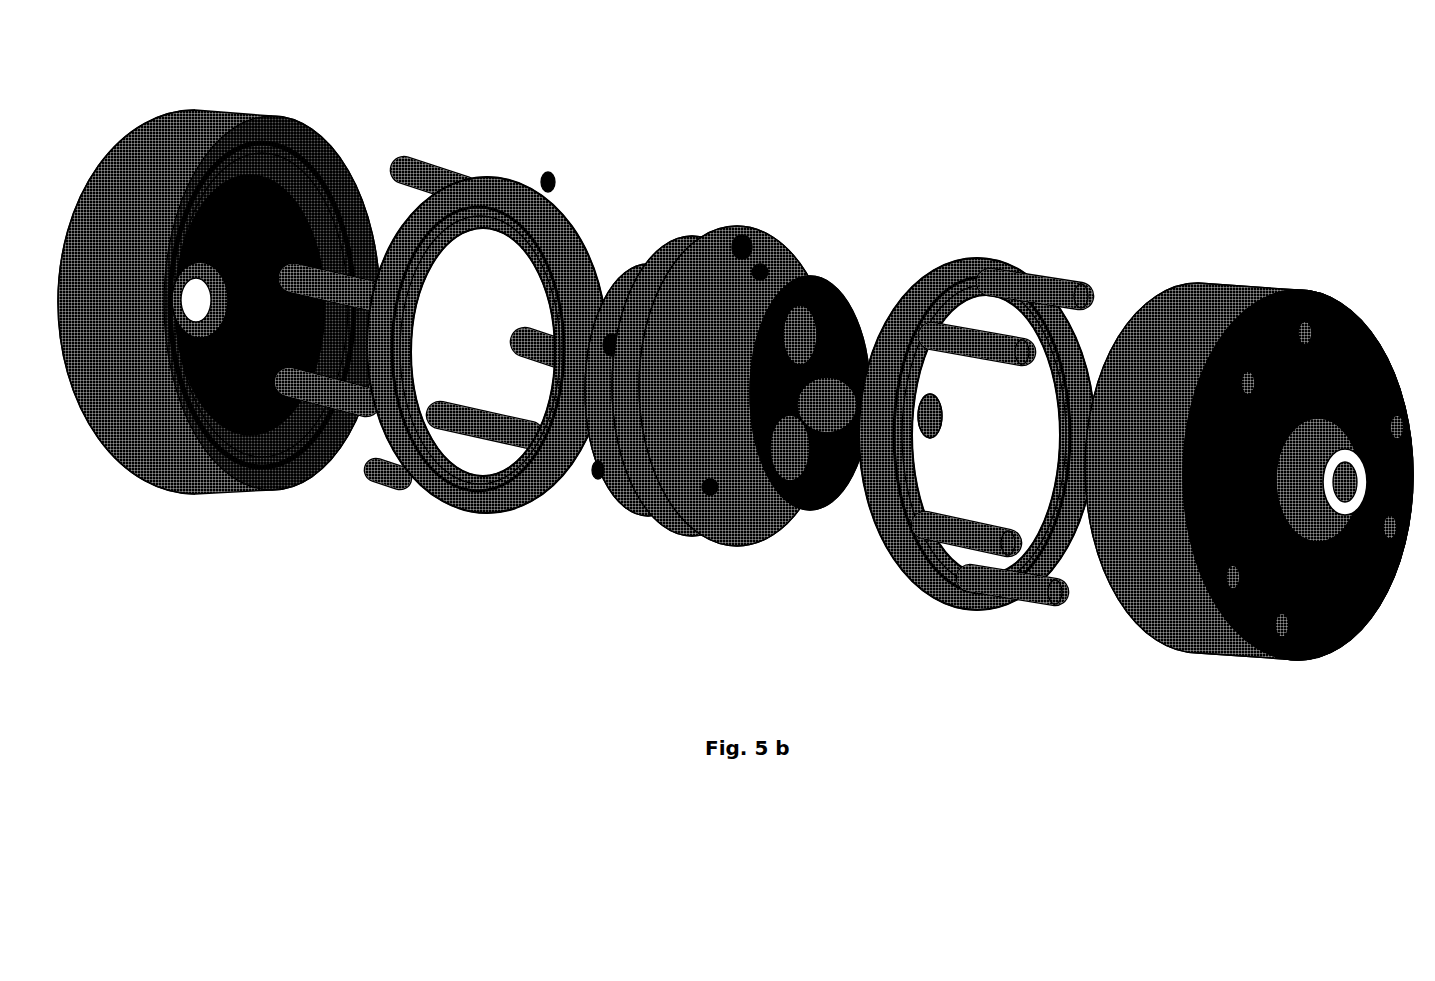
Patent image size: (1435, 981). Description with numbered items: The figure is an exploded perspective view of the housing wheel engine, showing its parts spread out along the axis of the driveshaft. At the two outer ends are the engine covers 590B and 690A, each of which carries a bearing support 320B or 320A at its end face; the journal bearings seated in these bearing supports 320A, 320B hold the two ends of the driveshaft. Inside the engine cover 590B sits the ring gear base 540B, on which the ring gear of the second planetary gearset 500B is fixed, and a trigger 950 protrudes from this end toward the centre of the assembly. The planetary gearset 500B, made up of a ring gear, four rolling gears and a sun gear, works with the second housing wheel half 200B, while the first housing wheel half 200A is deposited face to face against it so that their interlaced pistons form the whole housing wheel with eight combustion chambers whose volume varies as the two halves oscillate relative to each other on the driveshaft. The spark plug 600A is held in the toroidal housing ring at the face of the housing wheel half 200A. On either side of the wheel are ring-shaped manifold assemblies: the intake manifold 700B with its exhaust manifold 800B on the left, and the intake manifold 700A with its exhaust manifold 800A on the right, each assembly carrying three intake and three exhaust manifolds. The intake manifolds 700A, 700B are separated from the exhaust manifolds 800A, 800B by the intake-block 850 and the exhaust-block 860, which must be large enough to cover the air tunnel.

The engine cover 590B is at (130, 140).
The bearing support 320B is at (112, 482).
The ring gear base 540B is at (258, 128).
The trigger 950 is at (318, 142).
The exhaust-block 860 is at (545, 175).
The intake manifold 700B is at (588, 172).
The exhaust manifold 800B is at (540, 493).
The intake-block 850 is at (590, 465).
The planetary gearset 500B is at (640, 252).
The housing wheel half 200B is at (697, 228).
The housing wheel half 200A is at (790, 223).
The spark plug 600A is at (862, 250).
The intake manifold 700A is at (1042, 282).
The exhaust manifold 800A is at (977, 300).
The engine cover 690A is at (1195, 285).
The bearing support 320A is at (1355, 625).